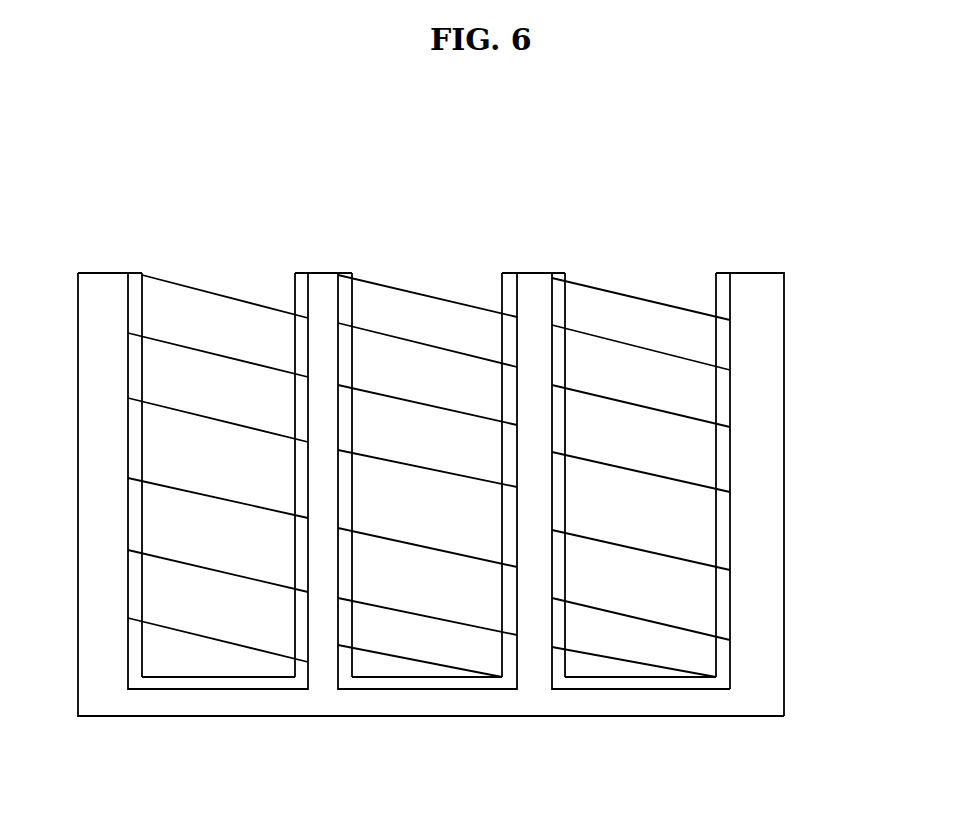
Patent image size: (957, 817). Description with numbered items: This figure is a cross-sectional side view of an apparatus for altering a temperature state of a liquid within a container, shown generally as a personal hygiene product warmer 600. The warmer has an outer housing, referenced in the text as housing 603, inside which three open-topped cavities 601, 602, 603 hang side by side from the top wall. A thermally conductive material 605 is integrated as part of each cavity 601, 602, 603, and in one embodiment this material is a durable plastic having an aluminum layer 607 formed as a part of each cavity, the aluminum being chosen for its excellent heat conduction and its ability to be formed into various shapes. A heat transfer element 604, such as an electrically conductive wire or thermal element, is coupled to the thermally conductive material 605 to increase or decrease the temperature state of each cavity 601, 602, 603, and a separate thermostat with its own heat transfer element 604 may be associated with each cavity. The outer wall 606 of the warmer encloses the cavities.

The personal hygiene product warmer 600 is at (80, 229).
The cavity 601 is at (203, 267).
The cavity 602 is at (455, 267).
The cavity 603 is at (633, 267).
The heat transfer element 604 is at (403, 319).
The thermally conductive material 605 is at (636, 681).
The container wall 606 is at (784, 580).
The aluminum layer 607 is at (739, 305).